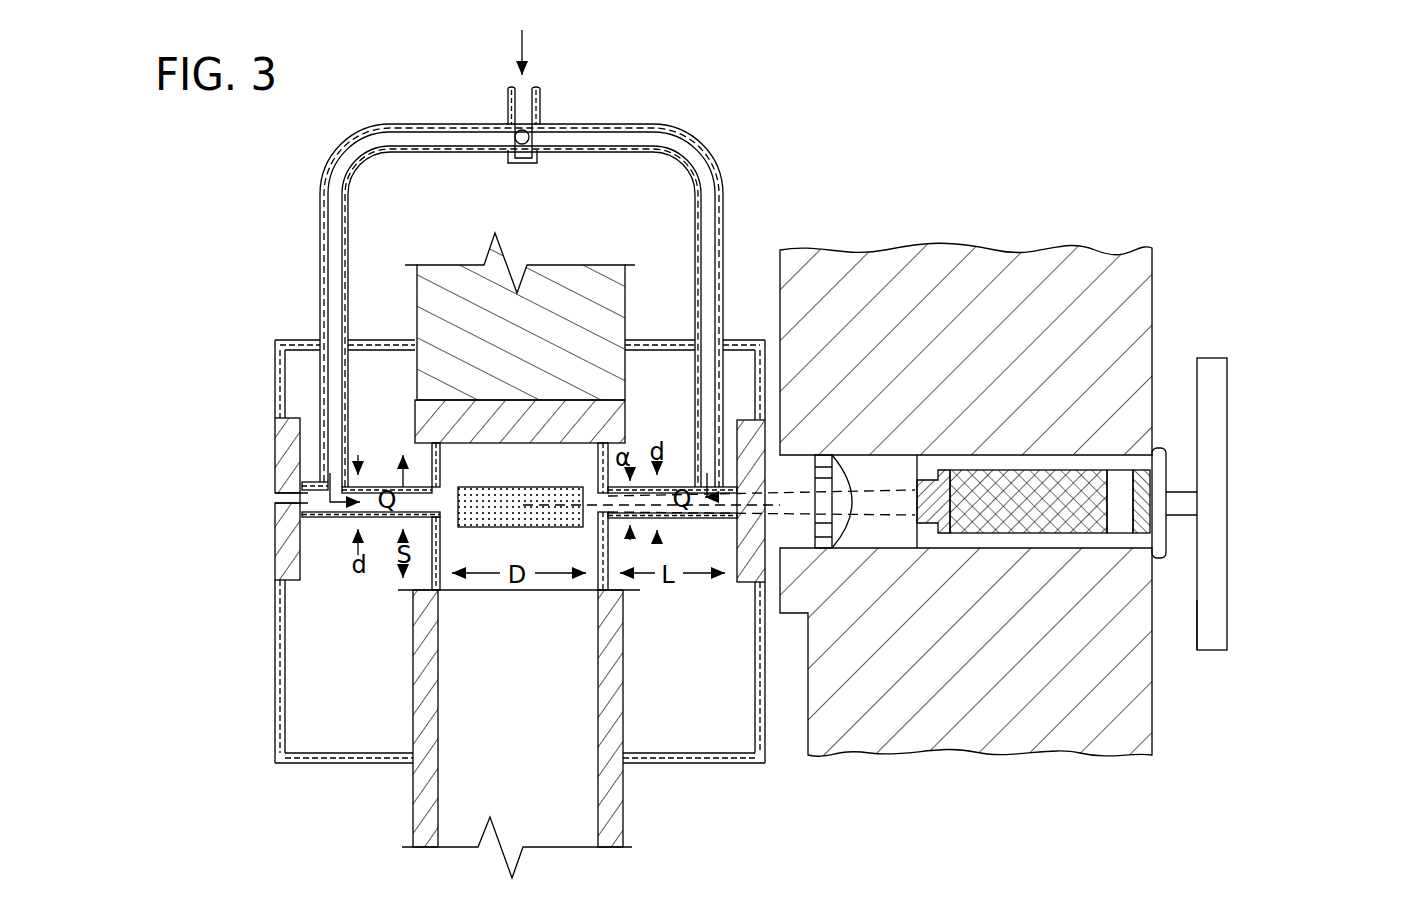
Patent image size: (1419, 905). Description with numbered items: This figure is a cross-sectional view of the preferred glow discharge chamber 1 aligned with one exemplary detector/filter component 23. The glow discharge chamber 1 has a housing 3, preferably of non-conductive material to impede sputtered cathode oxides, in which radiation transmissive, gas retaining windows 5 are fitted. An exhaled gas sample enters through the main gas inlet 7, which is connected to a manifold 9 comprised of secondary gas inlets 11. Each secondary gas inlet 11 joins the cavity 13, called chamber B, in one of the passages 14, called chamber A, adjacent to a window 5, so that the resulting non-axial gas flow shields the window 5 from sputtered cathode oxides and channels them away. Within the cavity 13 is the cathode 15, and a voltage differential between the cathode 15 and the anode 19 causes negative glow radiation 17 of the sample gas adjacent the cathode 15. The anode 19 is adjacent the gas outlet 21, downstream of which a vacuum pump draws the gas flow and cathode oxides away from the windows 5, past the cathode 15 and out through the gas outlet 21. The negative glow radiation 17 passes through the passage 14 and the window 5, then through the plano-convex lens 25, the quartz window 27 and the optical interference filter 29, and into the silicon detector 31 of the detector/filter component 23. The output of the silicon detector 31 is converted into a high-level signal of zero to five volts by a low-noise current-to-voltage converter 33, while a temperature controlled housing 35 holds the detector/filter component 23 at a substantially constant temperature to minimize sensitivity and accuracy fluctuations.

The glow discharge chamber 1 is at (250, 717).
The housing 3 is at (273, 682).
The window 5 is at (275, 470).
The main gas inlet 7 is at (522, 110).
The manifold 9 is at (542, 120).
The secondary gas inlet 11 is at (322, 233).
The cavity 13 is at (472, 460).
The passage 14 is at (300, 503).
The cathode 15 is at (595, 402).
The negative glow radiation 17 is at (472, 530).
The anode 19 is at (623, 833).
The gas outlet 21 is at (558, 837).
The detector/filter component 23 is at (1253, 430).
The plano-convex lens 25 is at (823, 548).
The quartz window 27 is at (945, 533).
The optical interference filter 29 is at (1018, 465).
The silicon detector 31 is at (1138, 465).
The current-to-voltage converter 33 is at (1227, 610).
The temperature controlled housing 35 is at (933, 753).